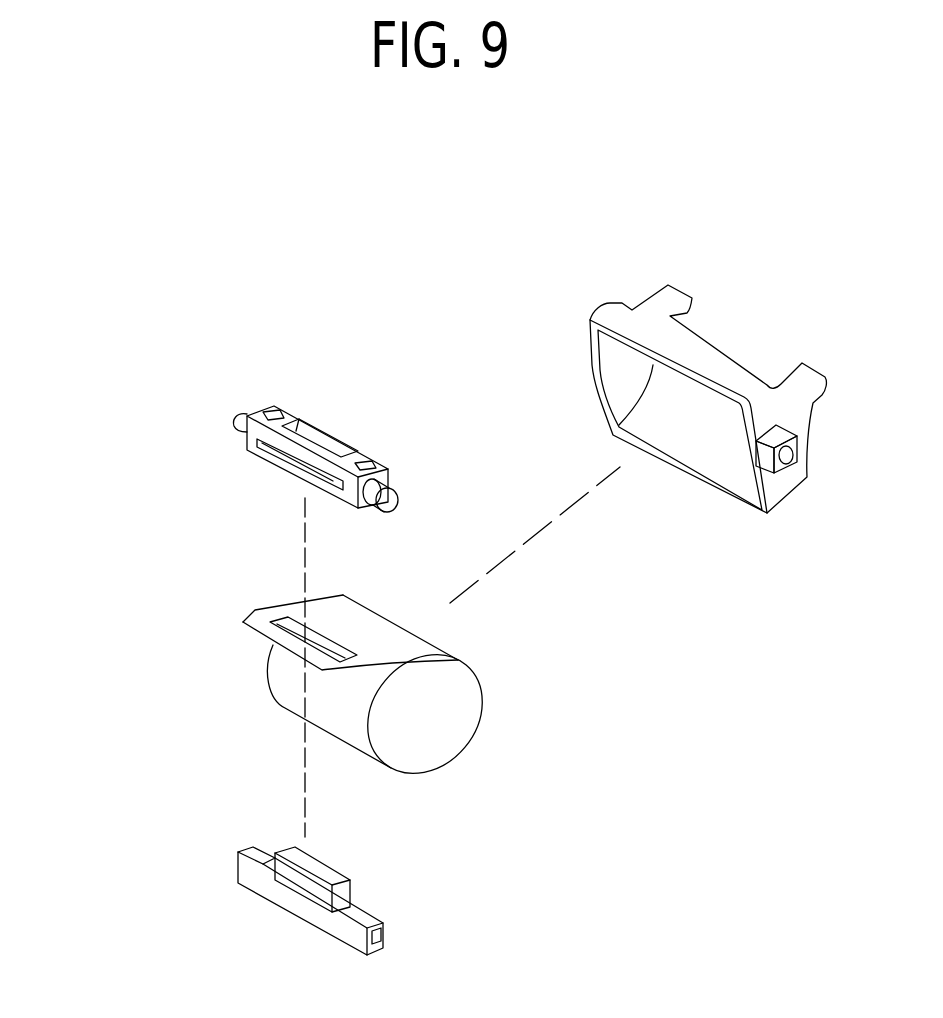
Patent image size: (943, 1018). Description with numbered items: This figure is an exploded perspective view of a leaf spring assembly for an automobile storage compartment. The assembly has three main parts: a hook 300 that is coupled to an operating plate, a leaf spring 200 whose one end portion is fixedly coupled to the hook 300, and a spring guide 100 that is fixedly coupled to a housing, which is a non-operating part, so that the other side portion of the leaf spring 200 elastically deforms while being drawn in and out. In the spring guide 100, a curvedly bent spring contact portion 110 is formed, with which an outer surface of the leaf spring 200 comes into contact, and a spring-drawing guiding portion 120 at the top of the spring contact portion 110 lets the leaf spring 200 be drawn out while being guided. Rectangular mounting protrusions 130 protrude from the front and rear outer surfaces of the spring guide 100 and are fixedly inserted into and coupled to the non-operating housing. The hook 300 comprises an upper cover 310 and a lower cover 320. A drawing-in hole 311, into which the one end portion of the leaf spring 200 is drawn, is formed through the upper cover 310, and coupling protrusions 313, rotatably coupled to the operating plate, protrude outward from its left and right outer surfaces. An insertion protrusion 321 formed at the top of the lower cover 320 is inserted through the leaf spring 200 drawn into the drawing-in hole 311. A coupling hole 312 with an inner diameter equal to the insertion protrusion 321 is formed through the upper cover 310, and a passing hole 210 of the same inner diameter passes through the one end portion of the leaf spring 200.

The spring guide 100 is at (716, 381).
The spring contact portion 110 is at (708, 460).
The spring-drawing guiding portion 120 is at (703, 363).
The mounting protrusion 130 is at (785, 457).
The leaf spring 200 is at (385, 690).
The passing hole 210 is at (320, 642).
The hook 300 is at (141, 917).
The upper cover 310 is at (291, 459).
The drawing-in hole 311 is at (290, 457).
The coupling hole 312 is at (320, 443).
The coupling protrusion 313 is at (390, 492).
The lower cover 320 is at (306, 892).
The insertion protrusion 321 is at (322, 872).